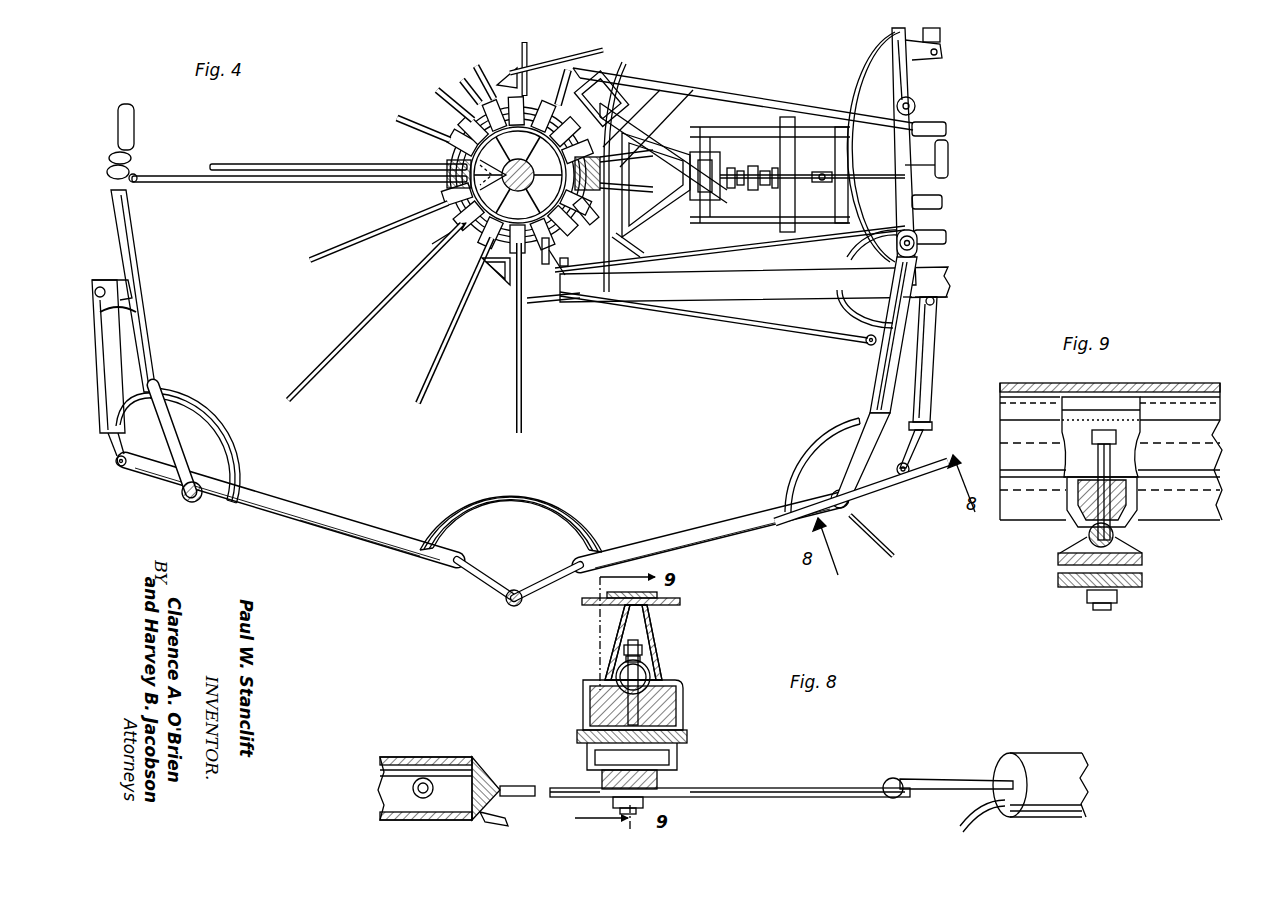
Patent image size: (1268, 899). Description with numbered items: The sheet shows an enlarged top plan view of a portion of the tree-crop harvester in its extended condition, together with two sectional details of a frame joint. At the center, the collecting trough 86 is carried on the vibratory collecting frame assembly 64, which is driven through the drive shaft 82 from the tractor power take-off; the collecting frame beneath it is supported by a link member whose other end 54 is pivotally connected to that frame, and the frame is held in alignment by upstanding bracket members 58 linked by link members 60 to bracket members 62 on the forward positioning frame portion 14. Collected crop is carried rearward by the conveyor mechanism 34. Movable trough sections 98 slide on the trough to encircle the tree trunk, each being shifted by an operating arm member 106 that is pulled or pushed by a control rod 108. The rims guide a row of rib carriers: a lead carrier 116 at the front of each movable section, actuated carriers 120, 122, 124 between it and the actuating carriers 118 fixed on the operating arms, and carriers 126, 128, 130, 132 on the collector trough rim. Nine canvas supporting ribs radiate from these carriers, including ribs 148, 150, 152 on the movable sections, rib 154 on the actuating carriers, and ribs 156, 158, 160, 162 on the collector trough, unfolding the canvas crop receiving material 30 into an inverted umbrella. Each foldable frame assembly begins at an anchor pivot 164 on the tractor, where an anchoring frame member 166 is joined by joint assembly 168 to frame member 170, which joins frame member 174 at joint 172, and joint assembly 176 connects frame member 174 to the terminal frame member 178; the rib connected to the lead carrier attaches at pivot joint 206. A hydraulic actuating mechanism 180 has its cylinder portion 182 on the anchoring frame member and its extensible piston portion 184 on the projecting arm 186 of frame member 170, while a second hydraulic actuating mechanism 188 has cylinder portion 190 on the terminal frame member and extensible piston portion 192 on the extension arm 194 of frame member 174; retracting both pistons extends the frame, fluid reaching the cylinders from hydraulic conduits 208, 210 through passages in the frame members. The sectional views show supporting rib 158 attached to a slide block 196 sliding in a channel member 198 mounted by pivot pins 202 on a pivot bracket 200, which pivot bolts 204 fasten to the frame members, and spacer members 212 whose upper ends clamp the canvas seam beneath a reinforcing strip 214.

In FIG. 4, the forward positioning frame portion 14 is at (294, 183).
In FIG. 8, the canvas crop receiving material 30 is at (673, 606).
In FIG. 9, the canvas crop receiving material 30 is at (1118, 386).
In FIG. 4, the conveyor mechanism 34 is at (768, 275).
In FIG. 4, the other end of link member 54 is at (790, 118).
In FIG. 4, the upstanding bracket members 58 is at (605, 169).
In FIG. 4, the link members 60 is at (738, 104).
In FIG. 4, the bracket members 62 is at (925, 122).
In FIG. 4, the vibratory collecting frame assembly 64 is at (693, 114).
In FIG. 4, the drive shaft 82 is at (760, 174).
In FIG. 4, the collecting trough 86 is at (545, 302).
In FIG. 4, the movable trough sections 98 is at (462, 120).
In FIG. 4, the operating arm member 106 is at (498, 276).
In FIG. 4, the control rod 108 is at (783, 330).
In FIG. 4, the lead carrier 116 is at (445, 158).
In FIG. 4, the actuating carriers 118 is at (527, 92).
In FIG. 4, the actuated carrier 120 is at (446, 130).
In FIG. 4, the actuated carrier 122 is at (472, 92).
In FIG. 4, the actuated carrier 124 is at (484, 78).
In FIG. 4, the carrier 126 is at (563, 68).
In FIG. 4, the carrier 128 is at (582, 112).
In FIG. 4, the carrier 130 is at (652, 118).
In FIG. 4, the carrier 132 is at (672, 108).
In FIG. 4, the supporting rib 148 is at (337, 251).
In FIG. 4, the supporting rib 150 is at (366, 330).
In FIG. 4, the supporting rib 152 is at (427, 392).
In FIG. 4, the supporting rib 154 is at (524, 385).
In FIG. 4, the supporting rib 156 is at (570, 300).
In FIG. 4, the supporting rib 158 is at (590, 268).
In FIG. 8, the supporting rib 158 is at (656, 666).
In FIG. 4, the supporting rib 160 is at (641, 262).
In FIG. 4, the supporting rib 162 is at (622, 166).
In FIG. 4, the anchor pivot 164 is at (920, 247).
In FIG. 4, the anchoring frame member 166 is at (872, 373).
In FIG. 8, the anchoring frame member 166 is at (758, 790).
In FIG. 4, the joint assembly 168 is at (840, 516).
In FIG. 8, the joint assembly 168 is at (694, 763).
In FIG. 4, the frame member 170 is at (688, 535).
In FIG. 8, the frame member 170 is at (460, 757).
In FIG. 4, the joint 172 is at (506, 608).
In FIG. 4, the frame member 174 is at (310, 517).
In FIG. 4, the joint assembly 176 is at (192, 481).
In FIG. 4, the terminal frame member 178 is at (152, 318).
In FIG. 4, the hydraulic actuating mechanism 180 is at (936, 366).
In FIG. 4, the cylinder portion 182 is at (934, 330).
In FIG. 8, the cylinder portion 182 is at (1047, 760).
In FIG. 4, the extensible piston portion 184 is at (918, 460).
In FIG. 8, the extensible piston portion 184 is at (958, 776).
In FIG. 4, the projecting arm 186 is at (890, 484).
In FIG. 8, the projecting arm 186 is at (810, 798).
In FIG. 4, the second hydraulic actuating mechanism 188 is at (103, 422).
In FIG. 4, the cylinder portion 190 is at (108, 382).
In FIG. 4, the extensible piston portion 192 is at (118, 468).
In FIG. 4, the extension arm 194 is at (142, 480).
In FIG. 8, the slide block 196 is at (672, 690).
In FIG. 8, the channel member 198 is at (684, 709).
In FIG. 8, the pivot bracket 200 is at (586, 760).
In FIG. 9, the pivot bracket 200 is at (1126, 562).
In FIG. 8, the pivot pins 202 is at (688, 742).
In FIG. 9, the pivot pins 202 is at (1086, 538).
In FIG. 8, the pivot bolts 204 is at (656, 796).
In FIG. 9, the pivot bolts 204 is at (1096, 594).
In FIG. 4, the pivot joint 206 is at (136, 194).
In FIG. 4, the hydraulic conduit 208 is at (852, 314).
In FIG. 4, the hydraulic conduit 210 is at (868, 305).
In FIG. 8, the spacer members 212 is at (613, 642).
In FIG. 9, the spacer members 212 is at (1050, 432).
In FIG. 8, the reinforcing strip 214 is at (652, 595).